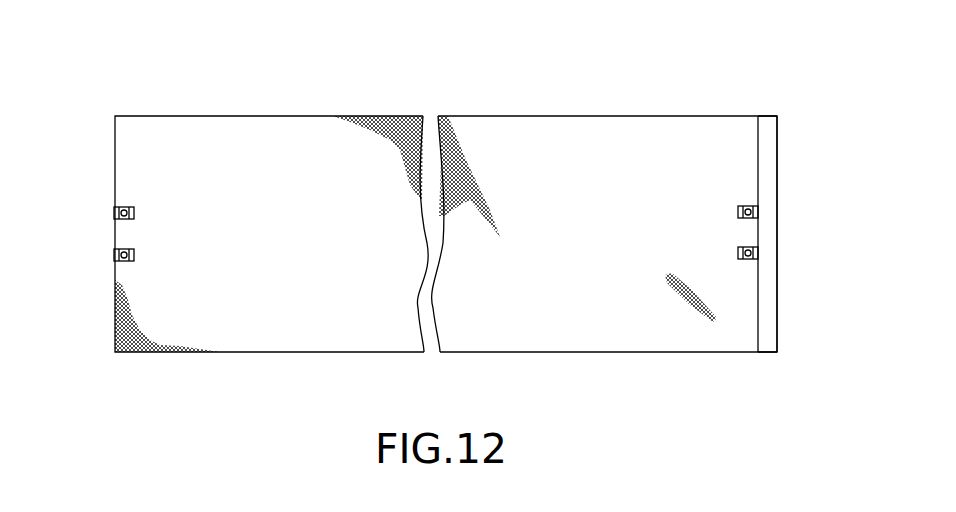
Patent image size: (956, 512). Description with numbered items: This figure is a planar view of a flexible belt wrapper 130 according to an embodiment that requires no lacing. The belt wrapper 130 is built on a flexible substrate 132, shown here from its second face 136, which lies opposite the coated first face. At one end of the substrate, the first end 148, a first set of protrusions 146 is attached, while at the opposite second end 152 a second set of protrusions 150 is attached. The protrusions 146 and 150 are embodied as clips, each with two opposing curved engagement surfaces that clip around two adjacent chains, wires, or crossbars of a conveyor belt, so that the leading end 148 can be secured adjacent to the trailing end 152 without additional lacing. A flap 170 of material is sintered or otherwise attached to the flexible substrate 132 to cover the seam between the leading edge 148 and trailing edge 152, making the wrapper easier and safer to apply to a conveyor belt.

The flexible belt wrapper 130 is at (439, 210).
The flexible substrate 132 is at (685, 127).
The second face 136 is at (597, 328).
The first set of protrusions 146 is at (738, 212).
The first end 148 is at (761, 142).
The second set of protrusions 150 is at (134, 213).
The second end 152 is at (113, 165).
The flap 170 is at (777, 318).